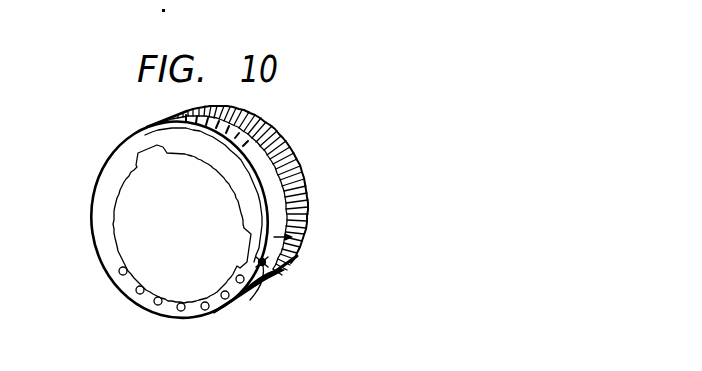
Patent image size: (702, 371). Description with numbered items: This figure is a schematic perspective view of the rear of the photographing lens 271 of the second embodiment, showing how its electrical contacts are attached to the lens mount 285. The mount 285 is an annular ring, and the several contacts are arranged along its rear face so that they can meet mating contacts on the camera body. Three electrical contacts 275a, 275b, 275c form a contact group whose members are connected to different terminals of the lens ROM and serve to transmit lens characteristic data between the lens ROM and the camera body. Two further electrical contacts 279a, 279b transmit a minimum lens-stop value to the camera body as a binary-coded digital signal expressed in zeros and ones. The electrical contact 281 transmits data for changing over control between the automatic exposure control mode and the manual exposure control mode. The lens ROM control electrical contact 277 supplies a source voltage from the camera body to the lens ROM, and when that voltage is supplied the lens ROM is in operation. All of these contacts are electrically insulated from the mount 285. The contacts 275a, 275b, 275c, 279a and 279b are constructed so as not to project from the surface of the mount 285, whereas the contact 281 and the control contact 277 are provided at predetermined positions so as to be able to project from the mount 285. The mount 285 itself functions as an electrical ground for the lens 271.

The photographing lens 271 is at (372, 266).
The electrical contact 275a is at (258, 268).
The electrical contact 275b is at (227, 305).
The electrical contact 275c is at (204, 313).
The lens ROM control electrical contact 277 is at (118, 271).
The electrical contact 279a is at (182, 314).
The electrical contact 279b is at (151, 311).
The electrical contact 281 is at (135, 292).
The mount 285 is at (285, 279).